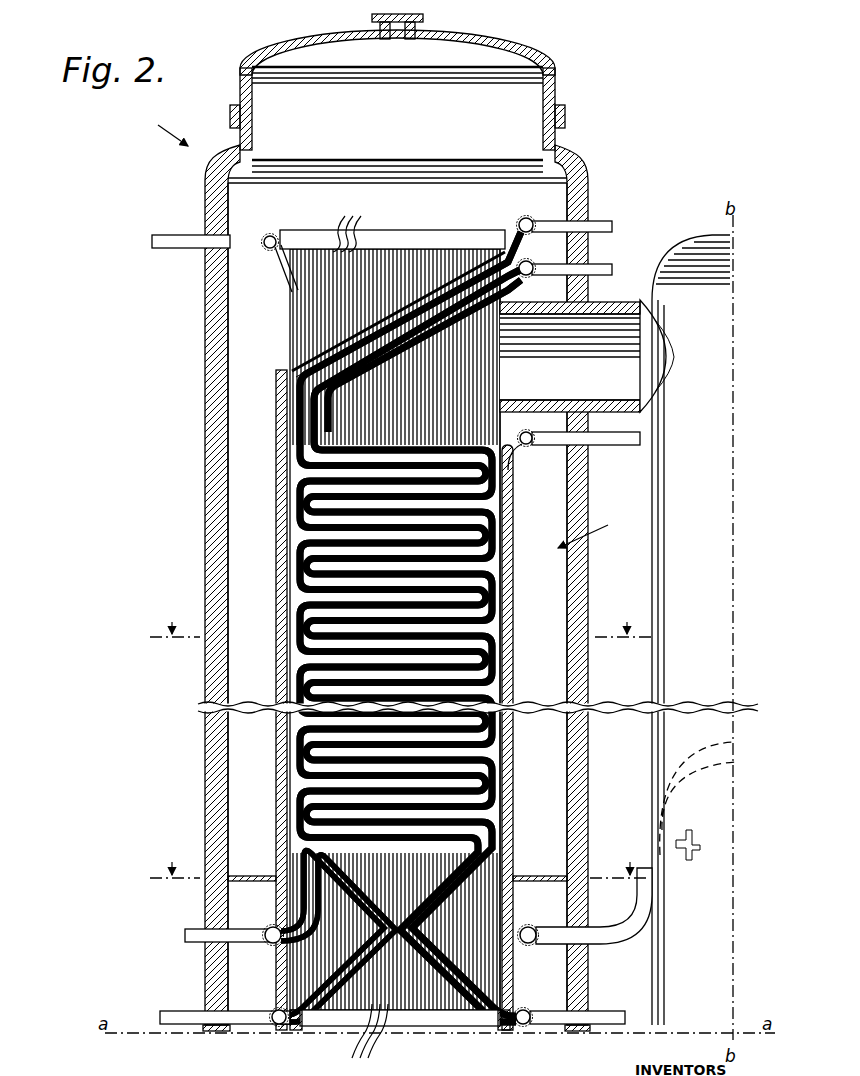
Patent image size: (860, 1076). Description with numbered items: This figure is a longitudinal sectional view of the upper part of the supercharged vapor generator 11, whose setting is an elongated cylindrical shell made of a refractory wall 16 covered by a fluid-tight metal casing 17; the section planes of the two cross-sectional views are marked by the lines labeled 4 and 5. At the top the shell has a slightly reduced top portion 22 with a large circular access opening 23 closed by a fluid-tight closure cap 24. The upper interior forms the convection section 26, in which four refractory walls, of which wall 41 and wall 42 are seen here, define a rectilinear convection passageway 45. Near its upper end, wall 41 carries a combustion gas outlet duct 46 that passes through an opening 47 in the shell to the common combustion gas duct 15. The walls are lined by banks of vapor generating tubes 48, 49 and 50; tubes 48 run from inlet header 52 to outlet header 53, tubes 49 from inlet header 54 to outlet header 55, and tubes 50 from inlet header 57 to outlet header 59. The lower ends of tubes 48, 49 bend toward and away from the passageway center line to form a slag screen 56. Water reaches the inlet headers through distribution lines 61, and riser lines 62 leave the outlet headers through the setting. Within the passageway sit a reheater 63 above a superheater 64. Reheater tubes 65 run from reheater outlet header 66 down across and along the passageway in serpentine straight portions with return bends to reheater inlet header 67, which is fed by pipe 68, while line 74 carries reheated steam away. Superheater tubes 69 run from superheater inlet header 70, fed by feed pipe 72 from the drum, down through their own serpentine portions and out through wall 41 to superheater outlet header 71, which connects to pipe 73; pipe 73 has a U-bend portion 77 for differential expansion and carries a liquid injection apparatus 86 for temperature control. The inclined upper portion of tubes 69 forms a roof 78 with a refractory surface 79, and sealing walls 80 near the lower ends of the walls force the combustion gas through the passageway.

The supercharged vapor generator 11 is at (160, 131).
The common combustion gas duct 15 is at (655, 572).
The refractory wall 16 is at (212, 503).
The fluid-tight metal casing 17 is at (588, 668).
The top portion 22 is at (562, 142).
The access opening 23 is at (412, 146).
The closure cap 24 is at (430, 30).
The convection section 26 is at (595, 529).
The refractory wall 41 is at (518, 635).
The refractory wall 42 is at (278, 459).
The convection passageway 45 is at (440, 566).
The combustion gas outlet duct 46 is at (532, 312).
The opening 47 is at (595, 302).
The vapor generating tubes 48 is at (520, 485).
The vapor generating tubes 49 is at (280, 355).
The vapor generating tubes 50 is at (360, 633).
The inlet header 52 is at (531, 1012).
The outlet header 53 is at (527, 447).
The inlet header 54 is at (272, 1012).
The outlet header 55 is at (268, 236).
The slag screen 56 is at (405, 920).
The inlet header 57 is at (455, 1028).
The outlet header 59 is at (410, 230).
The distribution lines 61 is at (255, 1035).
The riser lines 62 is at (162, 235).
The reheater 63 is at (496, 587).
The superheater 64 is at (496, 803).
The reheater tubes 65 is at (410, 440).
The reheater outlet header 66 is at (552, 254).
The reheater inlet header 67 is at (268, 926).
The pipe 68 is at (195, 942).
The superheater tubes 69 is at (415, 302).
The superheater inlet header 70 is at (528, 216).
The superheater outlet header 71 is at (532, 926).
The feed pipe 72 is at (596, 221).
The pipe 73 is at (622, 950).
The line 74 is at (600, 264).
The U-bend portion 77 is at (690, 775).
The roof 78 is at (325, 340).
The refractory surface 79 is at (382, 332).
The sealing walls 80 is at (250, 876).
The liquid injection apparatus 86 is at (692, 850).
The section line 4- 4 is at (402, 619).
The section line 5- 5 is at (400, 860).